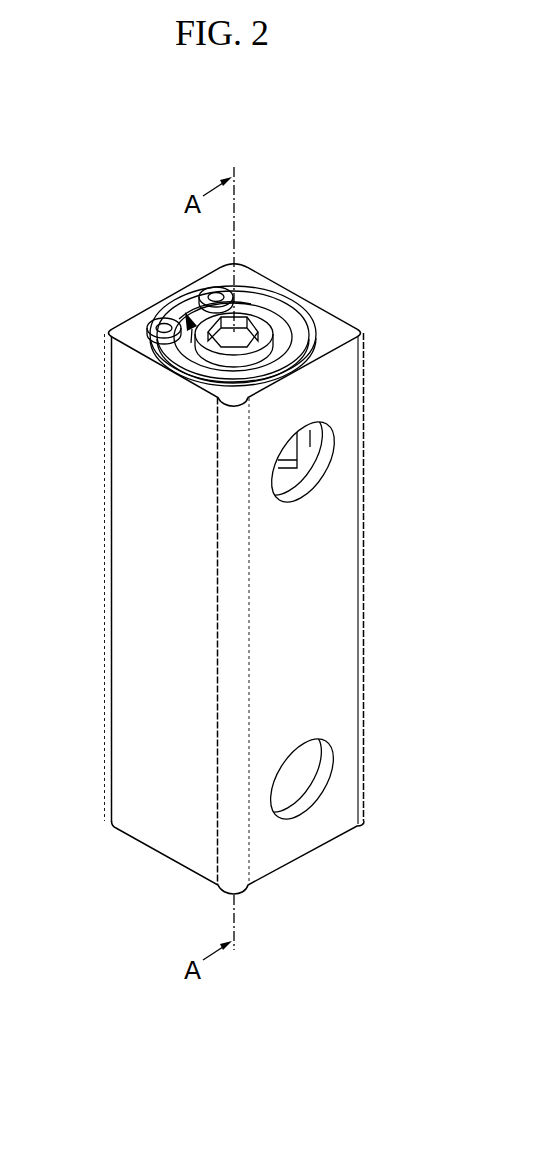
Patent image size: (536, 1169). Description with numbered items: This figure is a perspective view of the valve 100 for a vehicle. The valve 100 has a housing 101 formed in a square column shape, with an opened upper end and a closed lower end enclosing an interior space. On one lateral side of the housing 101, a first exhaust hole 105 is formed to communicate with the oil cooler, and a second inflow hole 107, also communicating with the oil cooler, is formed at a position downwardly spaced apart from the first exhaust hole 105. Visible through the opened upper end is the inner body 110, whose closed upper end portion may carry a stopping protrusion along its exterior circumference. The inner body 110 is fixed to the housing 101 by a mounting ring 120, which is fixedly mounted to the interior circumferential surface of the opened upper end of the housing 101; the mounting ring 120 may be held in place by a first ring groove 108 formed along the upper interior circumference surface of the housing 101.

The valve 100 is at (330, 262).
The housing 101 is at (342, 601).
The first exhaust hole 105 is at (320, 468).
The second inflow hole 107 is at (324, 770).
The first ring groove 108 is at (175, 340).
The inner body 110 is at (297, 343).
The mounting ring 120 is at (199, 294).